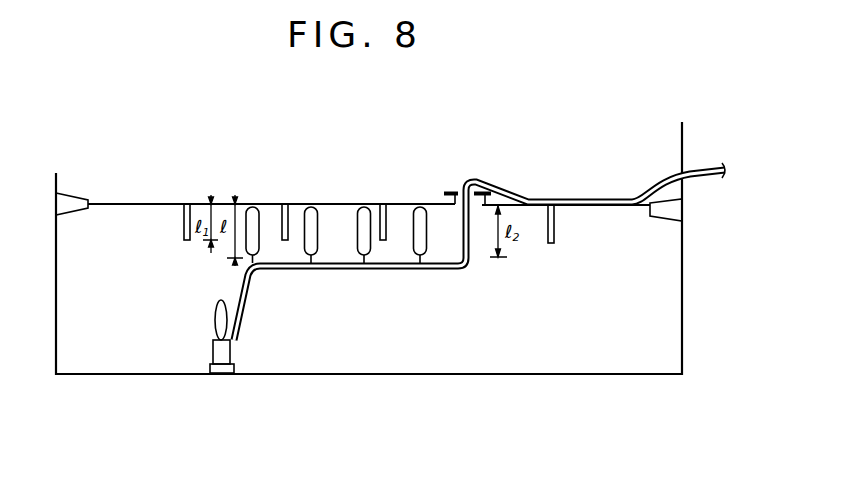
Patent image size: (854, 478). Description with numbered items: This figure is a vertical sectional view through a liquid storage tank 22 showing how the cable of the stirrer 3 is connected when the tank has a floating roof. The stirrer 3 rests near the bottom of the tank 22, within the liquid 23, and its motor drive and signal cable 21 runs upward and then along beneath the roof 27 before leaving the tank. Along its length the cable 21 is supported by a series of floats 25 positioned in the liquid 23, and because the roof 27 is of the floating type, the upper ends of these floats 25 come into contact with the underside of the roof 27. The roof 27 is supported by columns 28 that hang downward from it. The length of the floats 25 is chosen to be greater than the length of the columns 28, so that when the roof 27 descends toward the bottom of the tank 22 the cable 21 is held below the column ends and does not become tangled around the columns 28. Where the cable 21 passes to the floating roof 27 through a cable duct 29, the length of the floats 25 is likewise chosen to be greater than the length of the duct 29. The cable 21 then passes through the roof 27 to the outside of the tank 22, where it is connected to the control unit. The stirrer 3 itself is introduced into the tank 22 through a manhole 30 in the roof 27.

The stirrer 3 is at (238, 341).
The motor drive and signal cable 21 is at (396, 270).
The tank 22 is at (682, 303).
The liquid 23 is at (574, 302).
The floats 25 is at (358, 218).
The roof 27 is at (150, 203).
The columns 28 is at (183, 206).
The cable duct 29 is at (460, 228).
The manhole 30 is at (460, 192).